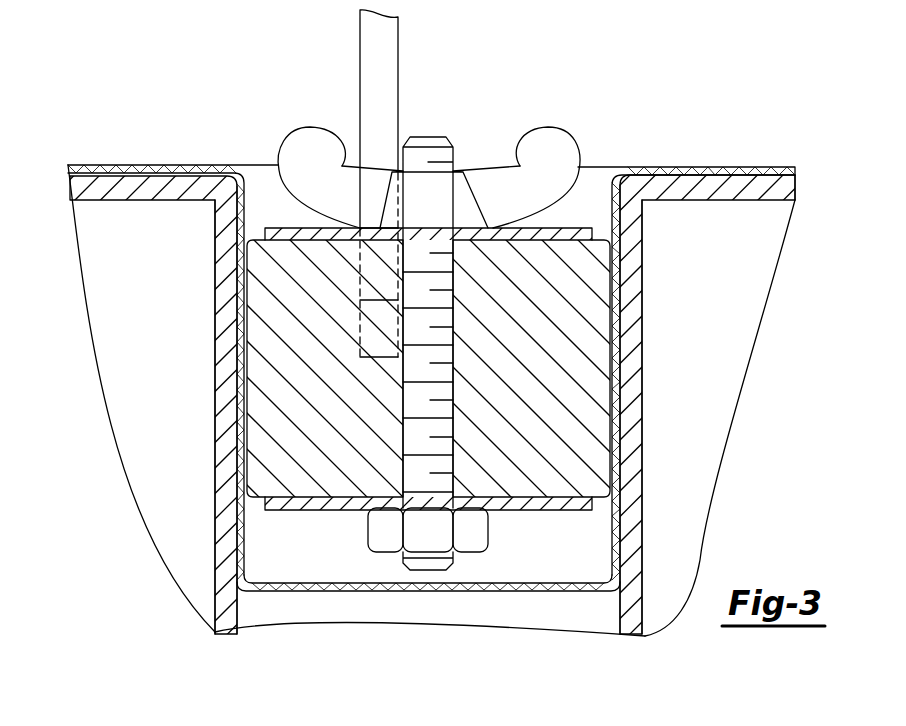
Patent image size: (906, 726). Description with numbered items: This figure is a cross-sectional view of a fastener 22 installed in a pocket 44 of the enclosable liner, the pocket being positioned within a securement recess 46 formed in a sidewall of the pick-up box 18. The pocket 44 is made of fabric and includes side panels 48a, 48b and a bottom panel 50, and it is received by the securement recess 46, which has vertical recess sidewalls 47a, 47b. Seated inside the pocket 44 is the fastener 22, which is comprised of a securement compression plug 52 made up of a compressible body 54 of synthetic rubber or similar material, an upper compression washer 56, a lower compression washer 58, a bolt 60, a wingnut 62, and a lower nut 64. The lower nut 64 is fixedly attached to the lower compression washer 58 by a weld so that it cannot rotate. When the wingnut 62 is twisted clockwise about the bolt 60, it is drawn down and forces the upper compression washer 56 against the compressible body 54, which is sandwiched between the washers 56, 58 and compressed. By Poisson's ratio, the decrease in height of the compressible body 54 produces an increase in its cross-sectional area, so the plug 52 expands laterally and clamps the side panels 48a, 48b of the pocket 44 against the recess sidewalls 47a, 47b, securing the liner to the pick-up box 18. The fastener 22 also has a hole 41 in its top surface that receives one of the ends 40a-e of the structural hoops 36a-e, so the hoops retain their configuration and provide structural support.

The pick-up box 18 is at (712, 210).
The fastener 22 is at (619, 100).
The structural hoops 36a-e is at (362, 82).
The ends of structural hoops 40a-e is at (363, 300).
The hole 41 is at (381, 229).
The pocket 44 is at (620, 598).
The securement recess 46 is at (555, 612).
The recess sidewall 47a is at (633, 367).
The recess sidewall 47b is at (230, 323).
The side panel 48a is at (630, 398).
The side panel 48b is at (240, 418).
The bottom panel 50 is at (366, 591).
The securement compression plug 52 is at (256, 133).
The compressible body 54 is at (573, 325).
The upper compression washer 56 is at (562, 233).
The lower compression washer 58 is at (563, 505).
The bolt 60 is at (430, 136).
The wingnut 62 is at (547, 135).
The lower nut 64 is at (474, 540).